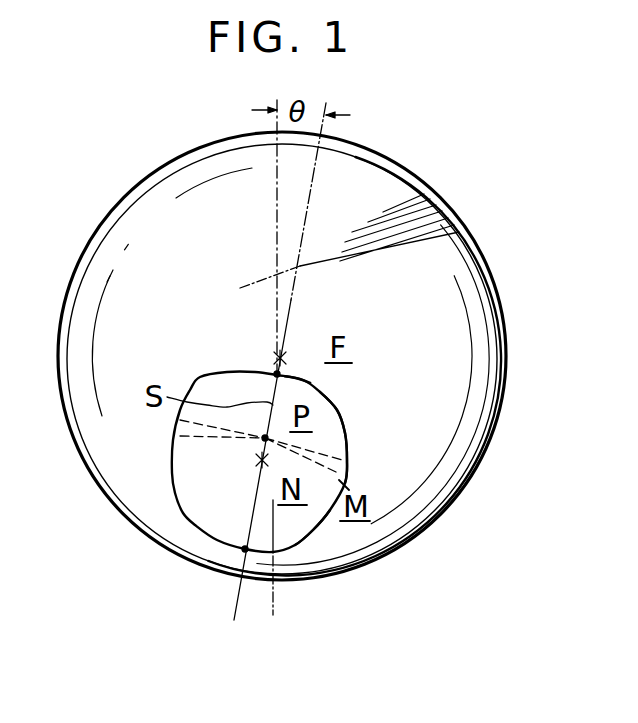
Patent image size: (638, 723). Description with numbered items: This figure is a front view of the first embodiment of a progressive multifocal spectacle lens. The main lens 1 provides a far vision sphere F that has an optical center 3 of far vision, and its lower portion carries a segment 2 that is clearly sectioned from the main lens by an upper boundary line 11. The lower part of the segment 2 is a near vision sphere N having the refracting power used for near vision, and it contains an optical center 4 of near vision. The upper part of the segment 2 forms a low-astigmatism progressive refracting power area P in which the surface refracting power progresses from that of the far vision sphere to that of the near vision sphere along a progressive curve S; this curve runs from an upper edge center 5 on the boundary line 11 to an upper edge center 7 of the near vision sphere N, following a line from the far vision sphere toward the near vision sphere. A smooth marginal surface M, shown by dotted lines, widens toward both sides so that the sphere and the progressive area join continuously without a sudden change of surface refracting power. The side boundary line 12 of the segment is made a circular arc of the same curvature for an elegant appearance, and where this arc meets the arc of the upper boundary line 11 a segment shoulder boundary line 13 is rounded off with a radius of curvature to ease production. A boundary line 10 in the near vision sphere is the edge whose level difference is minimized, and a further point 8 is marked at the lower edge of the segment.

The main lens 1 is at (185, 228).
The segment 2 is at (215, 507).
The optical center of far vision 3 is at (280, 358).
The optical center of near vision 4 is at (262, 460).
The upper edge center 5 is at (277, 373).
The upper edge center of the near vision sphere 7 is at (265, 438).
The rotor bottom contact point 8 is at (227, 550).
The boundary line 10 is at (313, 530).
The upper boundary line 11 is at (305, 380).
The side boundary line 12 is at (344, 444).
The segment shoulder boundary line 13 is at (336, 400).